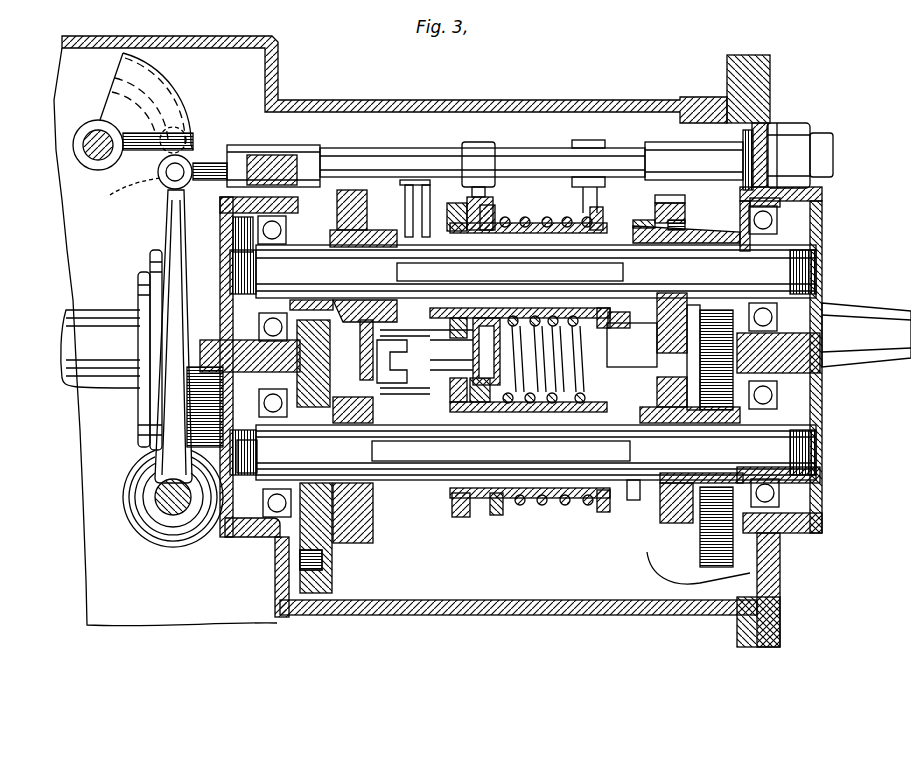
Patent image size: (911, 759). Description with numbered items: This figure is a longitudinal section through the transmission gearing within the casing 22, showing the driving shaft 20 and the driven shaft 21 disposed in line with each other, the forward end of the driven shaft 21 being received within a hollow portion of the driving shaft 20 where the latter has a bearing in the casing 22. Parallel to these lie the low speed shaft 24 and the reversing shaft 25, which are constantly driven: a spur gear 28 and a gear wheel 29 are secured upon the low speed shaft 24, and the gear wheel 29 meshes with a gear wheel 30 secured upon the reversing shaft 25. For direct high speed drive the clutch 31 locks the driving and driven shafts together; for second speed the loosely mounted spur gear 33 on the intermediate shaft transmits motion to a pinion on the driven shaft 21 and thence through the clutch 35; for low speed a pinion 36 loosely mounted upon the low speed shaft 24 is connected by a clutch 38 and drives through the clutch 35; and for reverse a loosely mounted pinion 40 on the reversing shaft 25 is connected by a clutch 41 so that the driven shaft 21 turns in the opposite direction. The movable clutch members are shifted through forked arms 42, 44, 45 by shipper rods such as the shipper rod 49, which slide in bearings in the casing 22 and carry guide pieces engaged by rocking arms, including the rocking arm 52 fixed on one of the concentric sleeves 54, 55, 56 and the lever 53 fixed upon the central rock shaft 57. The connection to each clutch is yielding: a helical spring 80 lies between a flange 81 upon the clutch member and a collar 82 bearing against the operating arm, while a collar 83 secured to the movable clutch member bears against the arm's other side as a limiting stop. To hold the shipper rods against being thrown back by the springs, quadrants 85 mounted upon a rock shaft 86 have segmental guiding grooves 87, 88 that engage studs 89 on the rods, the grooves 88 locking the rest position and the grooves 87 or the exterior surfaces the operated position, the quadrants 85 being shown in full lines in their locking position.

The driving shaft 20 is at (142, 378).
The driven shaft 21 is at (866, 335).
The casing 22 is at (645, 100).
The low speed shaft 24 is at (523, 452).
The reversing shaft 25 is at (523, 271).
The spur gear 28 is at (332, 580).
The gear wheel 29 is at (375, 530).
The gear wheel 30 is at (340, 193).
The clutch 31 is at (360, 361).
The spur gear 33 is at (710, 540).
The clutch 35 is at (670, 351).
The pinion 36 is at (668, 530).
The clutch 38 is at (656, 503).
The pinion 40 is at (688, 210).
The clutch 41 is at (681, 223).
The forked arm 42 is at (625, 140).
The forked arm 44 is at (480, 400).
The forked arm 45 is at (478, 186).
The shipper rod 49 is at (367, 160).
The rocking arm 52 is at (160, 452).
The lever 53 is at (170, 390).
The concentric sleeve 54 is at (185, 533).
The concentric sleeve 55 is at (124, 496).
The concentric sleeve 56 is at (155, 512).
The central rock shaft 57 is at (165, 515).
The helical spring 80 is at (542, 216).
The flange 81 is at (603, 212).
The collar 82 is at (497, 212).
The collar 83 is at (450, 530).
The quadrant 85 is at (170, 88).
The rock shaft 86 is at (85, 152).
The segmental guiding groove 87 is at (110, 95).
The segmental guiding groove 88 is at (120, 63).
The stud 89 is at (123, 192).